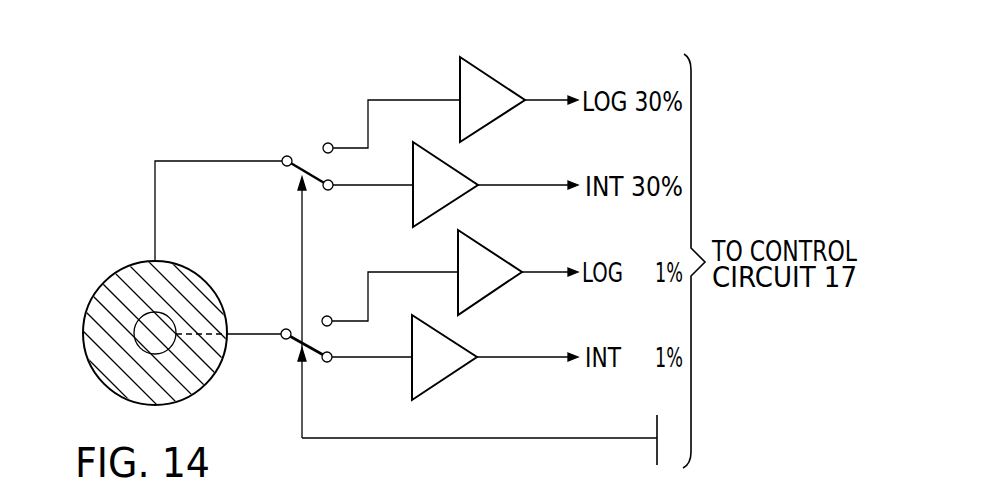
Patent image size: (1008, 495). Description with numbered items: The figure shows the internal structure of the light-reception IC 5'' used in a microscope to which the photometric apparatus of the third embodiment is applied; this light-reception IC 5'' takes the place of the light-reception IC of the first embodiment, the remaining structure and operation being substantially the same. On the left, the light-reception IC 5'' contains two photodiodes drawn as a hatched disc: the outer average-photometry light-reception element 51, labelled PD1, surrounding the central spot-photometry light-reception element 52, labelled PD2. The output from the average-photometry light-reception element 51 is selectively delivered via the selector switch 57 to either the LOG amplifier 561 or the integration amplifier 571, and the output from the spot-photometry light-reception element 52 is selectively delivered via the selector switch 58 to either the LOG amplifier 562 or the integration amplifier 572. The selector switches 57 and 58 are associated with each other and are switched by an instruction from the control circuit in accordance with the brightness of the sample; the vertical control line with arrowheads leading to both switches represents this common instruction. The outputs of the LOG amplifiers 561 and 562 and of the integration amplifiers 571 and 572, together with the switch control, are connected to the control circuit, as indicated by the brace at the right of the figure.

The average-photometry light-reception element 51 is at (115, 352).
The spot-photometry light-reception element 52 is at (140, 325).
The selector switch 57 is at (295, 173).
The selector switch 58 is at (293, 345).
The LOG amplifier 561 is at (497, 75).
The LOG amplifier 562 is at (458, 297).
The integration amplifier 571 is at (413, 213).
The integration amplifier 572 is at (453, 373).
The light-reception IC 5'' is at (388, 76).